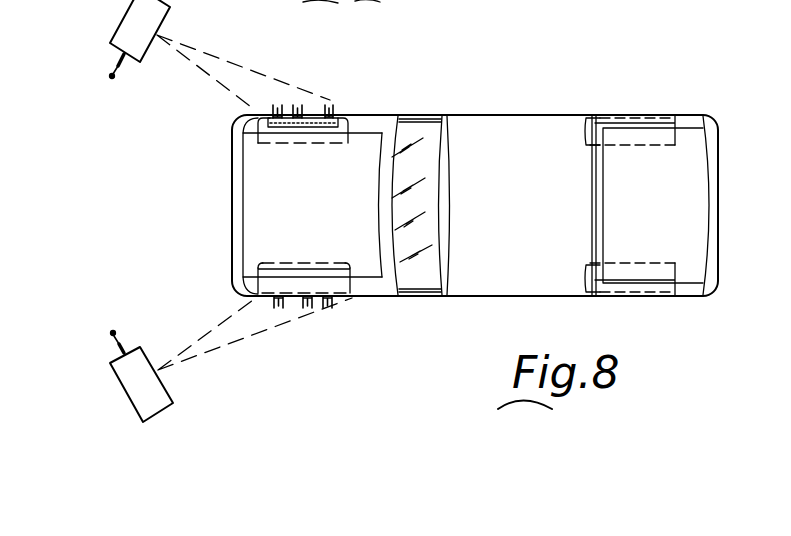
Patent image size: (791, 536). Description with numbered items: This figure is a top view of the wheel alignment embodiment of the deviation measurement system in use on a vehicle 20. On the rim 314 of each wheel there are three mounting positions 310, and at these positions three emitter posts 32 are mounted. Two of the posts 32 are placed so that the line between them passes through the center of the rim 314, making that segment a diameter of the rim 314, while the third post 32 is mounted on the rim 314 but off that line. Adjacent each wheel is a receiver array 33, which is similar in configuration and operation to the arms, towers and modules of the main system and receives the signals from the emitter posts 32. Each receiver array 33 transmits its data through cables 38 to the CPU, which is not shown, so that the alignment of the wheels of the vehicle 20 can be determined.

The vehicle 20 is at (510, 115).
The emitter posts 32 is at (332, 113).
The receiver array 33 is at (121, 21).
The cables 38 is at (111, 74).
The mounting positions 310 is at (297, 123).
The rim 314 is at (312, 117).